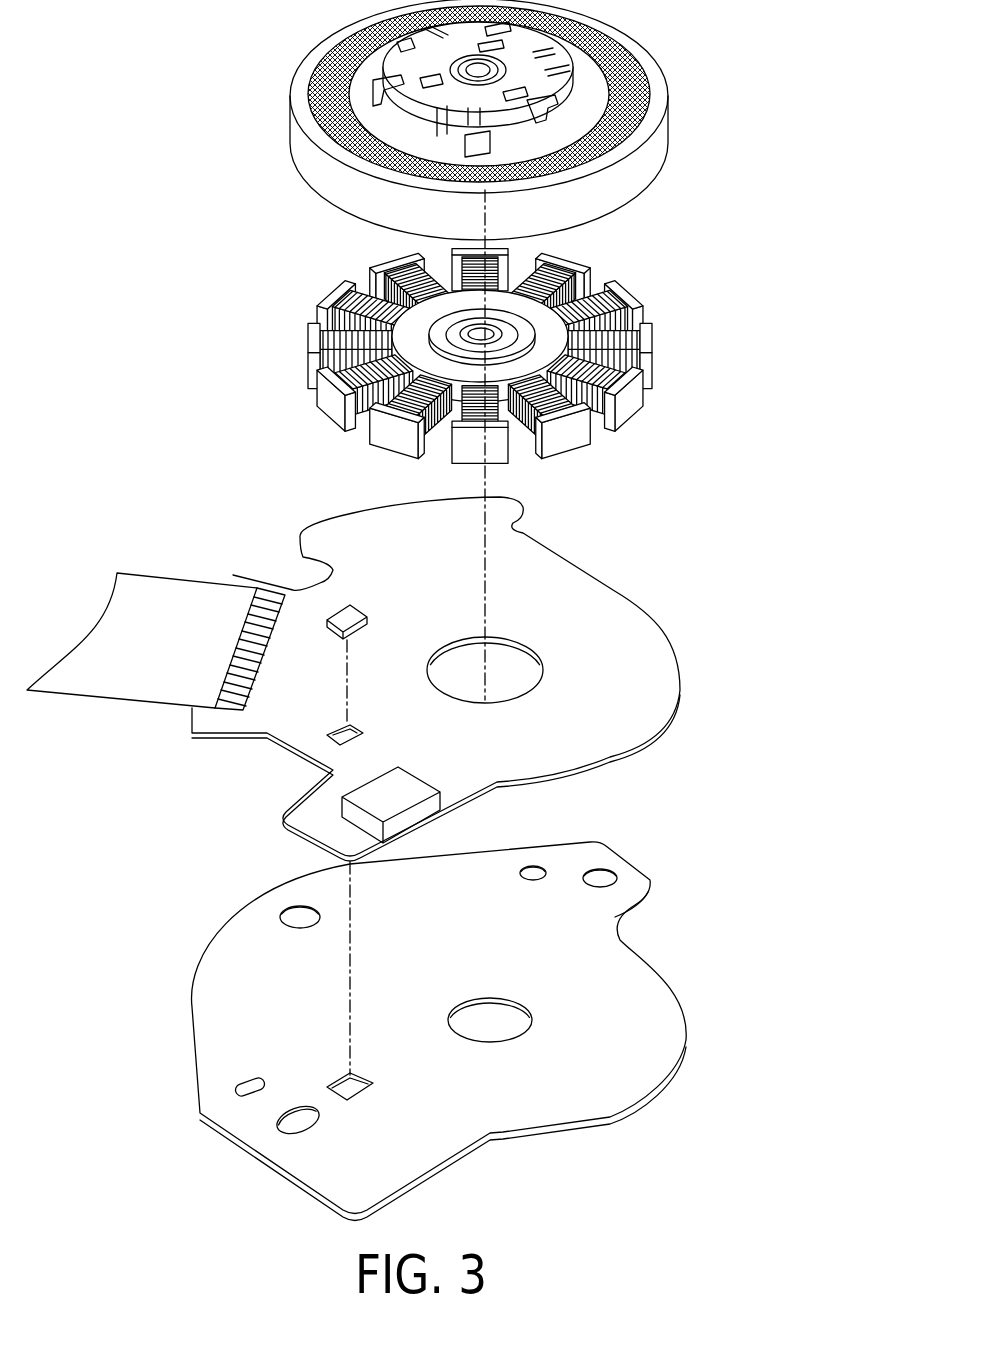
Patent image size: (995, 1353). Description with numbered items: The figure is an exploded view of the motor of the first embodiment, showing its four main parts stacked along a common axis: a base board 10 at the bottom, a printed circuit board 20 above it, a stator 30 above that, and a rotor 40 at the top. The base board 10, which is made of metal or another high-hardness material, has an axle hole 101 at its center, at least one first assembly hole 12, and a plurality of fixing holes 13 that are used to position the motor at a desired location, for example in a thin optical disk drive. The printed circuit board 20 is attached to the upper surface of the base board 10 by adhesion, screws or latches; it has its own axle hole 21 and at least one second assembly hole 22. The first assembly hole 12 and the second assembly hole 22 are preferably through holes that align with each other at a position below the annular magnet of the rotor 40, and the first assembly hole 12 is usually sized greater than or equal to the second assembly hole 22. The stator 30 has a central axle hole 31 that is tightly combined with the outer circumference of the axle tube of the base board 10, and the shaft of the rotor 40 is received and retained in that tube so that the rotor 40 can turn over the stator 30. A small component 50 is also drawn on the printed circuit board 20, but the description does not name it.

The base board 10 is at (481, 1016).
The axle hole 101 is at (517, 1032).
The first assembly hole 12 is at (370, 1087).
The fixing holes 13 is at (600, 880).
The printed circuit board 20 is at (491, 679).
The axle hole 21 is at (513, 640).
The second assembly hole 22 is at (333, 737).
The stator 30 is at (525, 356).
The axle hole 31 is at (535, 338).
The rotor 40 is at (642, 168).
The sensor chip 50 is at (340, 615).